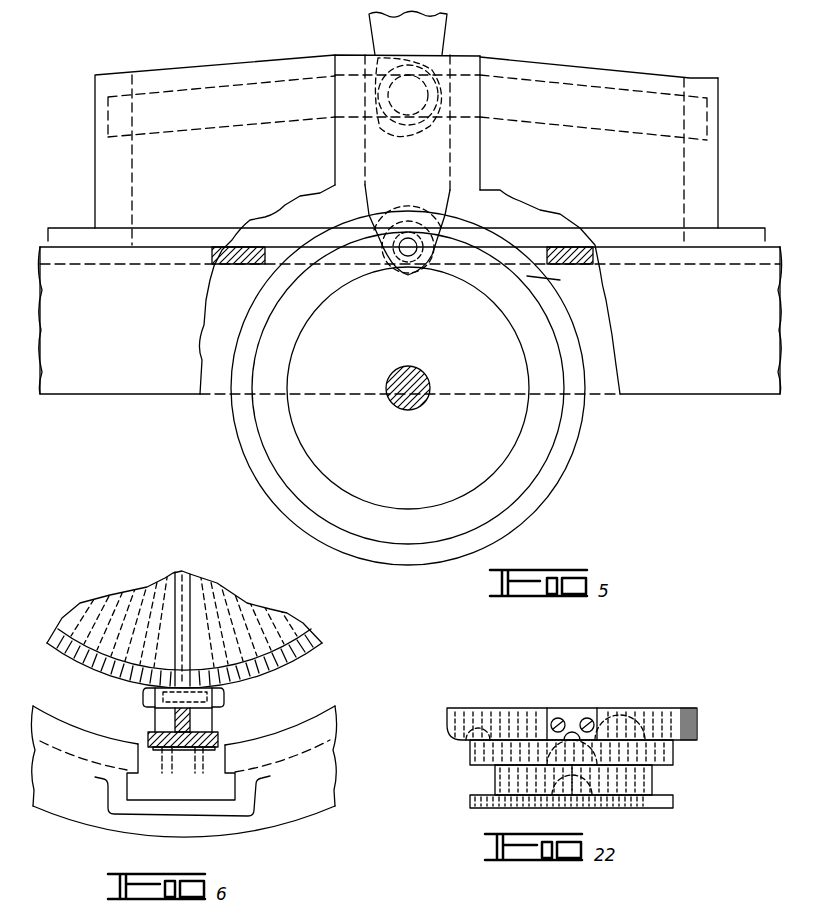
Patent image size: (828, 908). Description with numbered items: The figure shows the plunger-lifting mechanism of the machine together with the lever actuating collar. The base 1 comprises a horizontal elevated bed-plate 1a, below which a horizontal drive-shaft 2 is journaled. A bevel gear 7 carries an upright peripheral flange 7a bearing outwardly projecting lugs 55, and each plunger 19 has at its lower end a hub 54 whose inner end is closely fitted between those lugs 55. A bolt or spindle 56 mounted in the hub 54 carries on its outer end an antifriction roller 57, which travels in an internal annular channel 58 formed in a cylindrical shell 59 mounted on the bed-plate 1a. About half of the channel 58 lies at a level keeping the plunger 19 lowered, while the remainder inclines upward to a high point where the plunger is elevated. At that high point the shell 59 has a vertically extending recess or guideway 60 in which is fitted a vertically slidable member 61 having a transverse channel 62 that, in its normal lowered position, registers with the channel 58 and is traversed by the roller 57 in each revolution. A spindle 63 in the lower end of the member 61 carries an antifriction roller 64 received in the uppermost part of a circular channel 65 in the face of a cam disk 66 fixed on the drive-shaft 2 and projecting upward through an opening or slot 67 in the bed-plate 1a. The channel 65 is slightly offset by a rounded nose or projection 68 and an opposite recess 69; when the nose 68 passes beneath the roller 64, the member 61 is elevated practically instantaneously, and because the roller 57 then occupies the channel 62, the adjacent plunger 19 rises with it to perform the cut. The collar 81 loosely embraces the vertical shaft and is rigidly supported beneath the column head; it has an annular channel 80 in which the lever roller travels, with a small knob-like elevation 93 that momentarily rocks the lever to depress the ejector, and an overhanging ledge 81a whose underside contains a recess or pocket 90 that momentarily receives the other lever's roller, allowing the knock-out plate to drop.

In FIG. 5, the base 1 is at (128, 385).
In FIG. 5, the bed-plate 1a is at (228, 252).
In FIG. 5, the drive-shaft 2 is at (432, 386).
In FIG. 6, the bevel gear 7 is at (292, 630).
In FIG. 6, the peripheral flange 7a is at (305, 647).
In FIG. 5, the plunger 19 is at (443, 30).
In FIG. 6, the plunger 19 is at (218, 735).
In FIG. 6, the hub 54 is at (155, 726).
In FIG. 6, the lugs 55 is at (143, 694).
In FIG. 6, the bolt or spindle 56 is at (160, 708).
In FIG. 5, the antifriction roller 57 is at (372, 60).
In FIG. 6, the antifriction roller 57 is at (225, 762).
In FIG. 5, the internal annular channel 58 is at (593, 80).
In FIG. 6, the internal annular channel 58 is at (300, 750).
In FIG. 5, the cylindrical shell 59 is at (708, 155).
In FIG. 6, the cylindrical shell 59 is at (60, 733).
In FIG. 5, the recess or guideway 60 is at (450, 150).
In FIG. 6, the recess or guideway 60 is at (127, 790).
In FIG. 5, the vertically slidable member 61 is at (366, 200).
In FIG. 6, the vertically slidable member 61 is at (230, 788).
In FIG. 5, the transverse channel 62 is at (407, 109).
In FIG. 6, the transverse channel 62 is at (157, 775).
In FIG. 5, the spindle 63 is at (430, 249).
In FIG. 5, the antifriction roller 64 is at (409, 225).
In FIG. 5, the circular channel 65 is at (545, 445).
In FIG. 5, the cam disk 66 is at (242, 437).
In FIG. 5, the opening or slot 67 is at (262, 268).
In FIG. 5, the nose or projection 68 is at (500, 297).
In FIG. 5, the recess 69 is at (555, 285).
In FIG. 22, the channel 80 is at (660, 779).
In FIG. 22, the collar 81 is at (522, 716).
In FIG. 22, the overhanging ledge 81a is at (698, 746).
In FIG. 22, the recess or pocket 90 is at (579, 712).
In FIG. 22, the knob-like elevation 93 is at (575, 802).